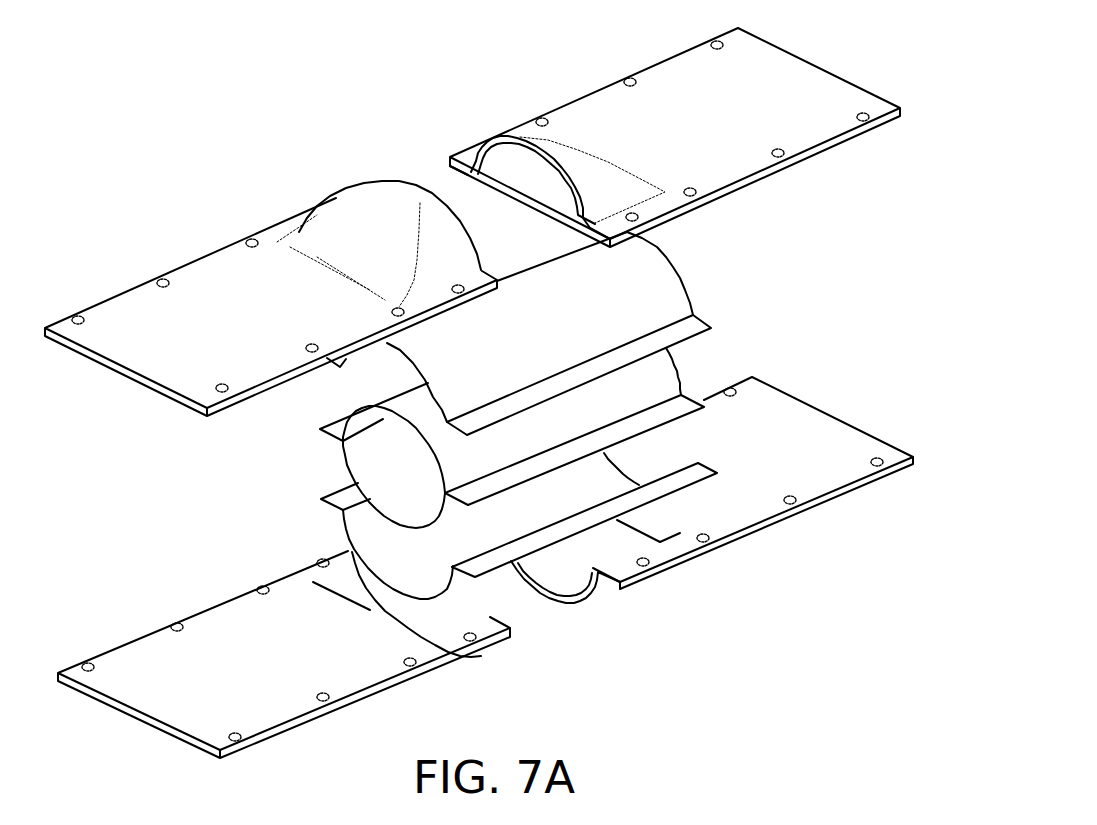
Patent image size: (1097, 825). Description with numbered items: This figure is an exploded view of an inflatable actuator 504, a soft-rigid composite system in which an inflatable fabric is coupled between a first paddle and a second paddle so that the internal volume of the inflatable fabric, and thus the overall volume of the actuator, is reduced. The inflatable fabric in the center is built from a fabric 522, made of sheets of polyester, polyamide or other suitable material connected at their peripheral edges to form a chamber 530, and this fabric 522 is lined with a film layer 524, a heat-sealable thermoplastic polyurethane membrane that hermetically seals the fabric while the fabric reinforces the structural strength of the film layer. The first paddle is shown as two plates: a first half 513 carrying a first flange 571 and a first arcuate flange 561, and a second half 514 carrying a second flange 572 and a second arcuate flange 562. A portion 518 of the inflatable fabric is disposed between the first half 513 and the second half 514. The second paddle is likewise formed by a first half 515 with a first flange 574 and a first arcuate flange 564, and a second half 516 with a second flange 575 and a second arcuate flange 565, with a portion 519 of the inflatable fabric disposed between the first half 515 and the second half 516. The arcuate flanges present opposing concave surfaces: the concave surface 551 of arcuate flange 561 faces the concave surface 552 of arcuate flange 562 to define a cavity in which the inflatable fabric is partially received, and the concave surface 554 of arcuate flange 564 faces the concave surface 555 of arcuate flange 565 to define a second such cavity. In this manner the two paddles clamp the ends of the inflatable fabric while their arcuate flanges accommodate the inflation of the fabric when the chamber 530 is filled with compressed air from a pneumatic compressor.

The inflatable actuator 504 is at (230, 100).
The first half 513 is at (130, 300).
The second half 514 is at (138, 657).
The first half 515 is at (592, 110).
The second half 516 is at (813, 413).
The portion 518 is at (477, 567).
The portion 519 is at (700, 475).
The fabric 522 is at (667, 270).
The film layer 524 is at (683, 370).
The chamber 530 is at (380, 468).
The concave surface 551 is at (432, 183).
The concave surface 552 is at (360, 588).
The concave surface 554 is at (503, 192).
The concave surface 555 is at (585, 560).
The first arcuate flange 561 is at (357, 223).
The second arcuate flange 562 is at (430, 643).
The first arcuate flange 564 is at (530, 143).
The second arcuate flange 565 is at (567, 583).
The first flange 571 is at (220, 278).
The second flange 572 is at (285, 625).
The first flange 574 is at (678, 90).
The second flange 575 is at (835, 465).